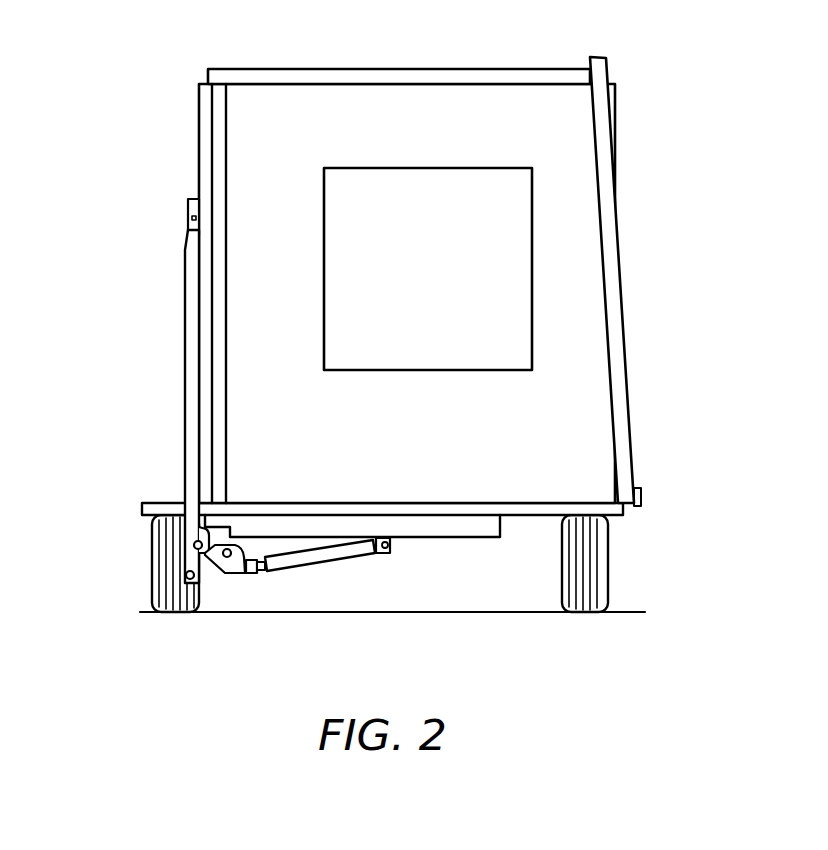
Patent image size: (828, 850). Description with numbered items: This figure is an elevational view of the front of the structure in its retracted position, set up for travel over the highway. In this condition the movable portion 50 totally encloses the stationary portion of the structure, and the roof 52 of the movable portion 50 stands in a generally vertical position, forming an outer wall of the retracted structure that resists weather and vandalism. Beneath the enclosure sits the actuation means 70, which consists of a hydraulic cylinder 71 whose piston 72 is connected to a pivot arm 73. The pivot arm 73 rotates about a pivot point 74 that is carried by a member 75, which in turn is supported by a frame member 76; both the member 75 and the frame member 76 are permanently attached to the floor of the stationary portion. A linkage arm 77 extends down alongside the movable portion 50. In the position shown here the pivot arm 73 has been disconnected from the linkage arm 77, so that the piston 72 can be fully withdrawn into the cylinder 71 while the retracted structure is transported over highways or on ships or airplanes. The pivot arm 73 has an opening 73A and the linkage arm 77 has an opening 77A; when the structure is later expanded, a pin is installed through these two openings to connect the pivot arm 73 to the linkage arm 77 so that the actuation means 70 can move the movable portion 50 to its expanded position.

The movable portion 50 is at (407, 259).
The roof 52 is at (643, 281).
The actuation means 70 is at (361, 602).
The hydraulic cylinder 71 is at (331, 599).
The piston 72 is at (278, 609).
The pivot arm 73 is at (211, 617).
The opening 73A is at (190, 603).
The pivot point 74 is at (194, 545).
The member 75 is at (158, 505).
The frame member 76 is at (352, 556).
The linkage arm 77 is at (150, 391).
The opening 77A is at (186, 575).